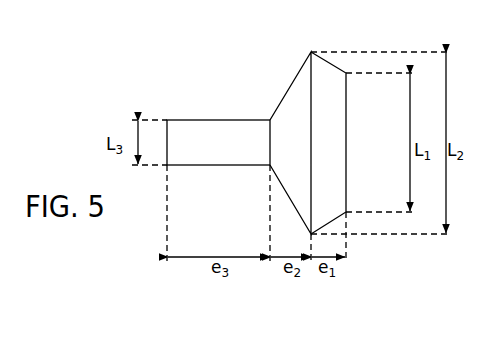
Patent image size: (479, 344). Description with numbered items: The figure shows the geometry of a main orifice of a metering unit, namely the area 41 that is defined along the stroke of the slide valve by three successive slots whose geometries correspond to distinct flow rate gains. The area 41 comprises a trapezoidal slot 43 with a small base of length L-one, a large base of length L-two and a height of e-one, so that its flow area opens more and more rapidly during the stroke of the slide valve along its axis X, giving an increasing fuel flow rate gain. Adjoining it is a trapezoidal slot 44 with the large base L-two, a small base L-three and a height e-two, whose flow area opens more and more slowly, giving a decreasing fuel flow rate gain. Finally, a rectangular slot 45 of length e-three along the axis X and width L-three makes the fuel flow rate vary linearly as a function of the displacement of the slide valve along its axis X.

The area 41 is at (216, 84).
The trapezoidal slot 43 is at (332, 140).
The trapezoidal slot 44 is at (292, 122).
The rectangular slot 45 is at (193, 137).